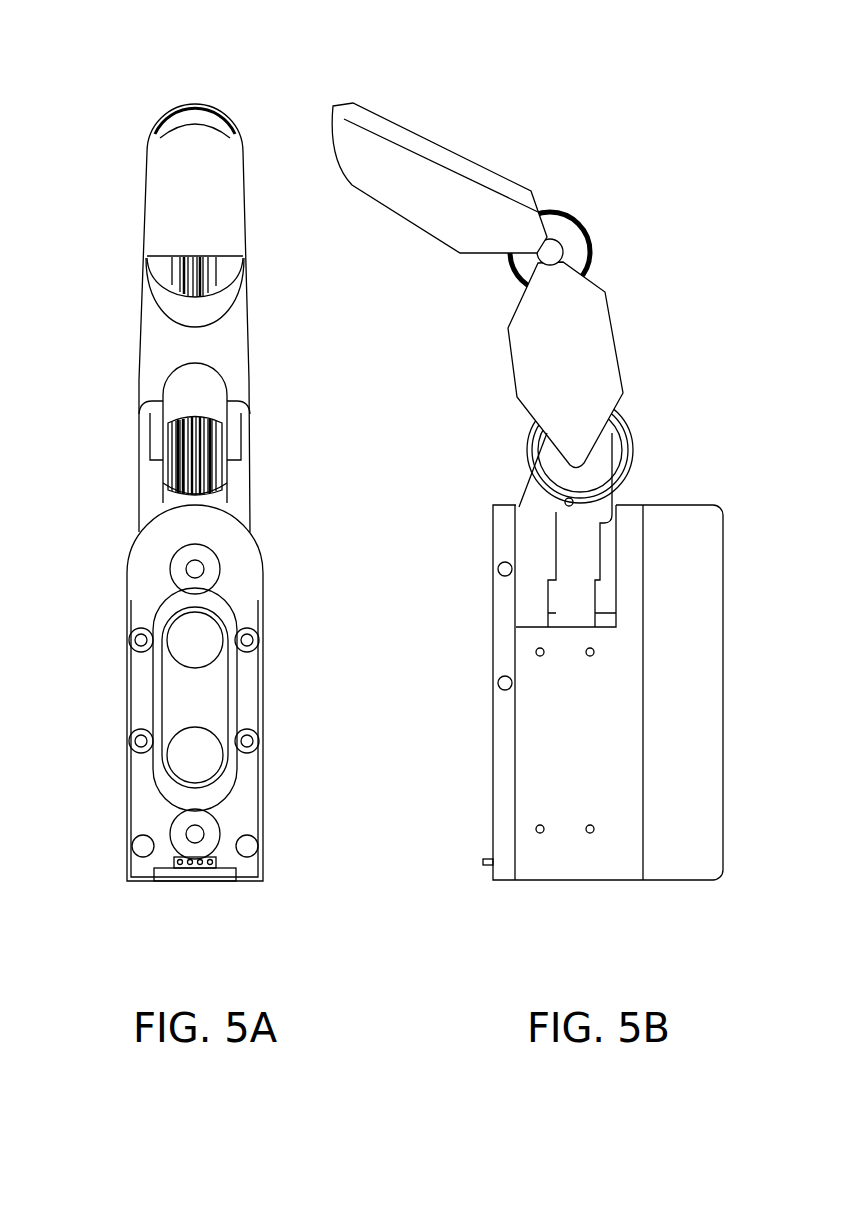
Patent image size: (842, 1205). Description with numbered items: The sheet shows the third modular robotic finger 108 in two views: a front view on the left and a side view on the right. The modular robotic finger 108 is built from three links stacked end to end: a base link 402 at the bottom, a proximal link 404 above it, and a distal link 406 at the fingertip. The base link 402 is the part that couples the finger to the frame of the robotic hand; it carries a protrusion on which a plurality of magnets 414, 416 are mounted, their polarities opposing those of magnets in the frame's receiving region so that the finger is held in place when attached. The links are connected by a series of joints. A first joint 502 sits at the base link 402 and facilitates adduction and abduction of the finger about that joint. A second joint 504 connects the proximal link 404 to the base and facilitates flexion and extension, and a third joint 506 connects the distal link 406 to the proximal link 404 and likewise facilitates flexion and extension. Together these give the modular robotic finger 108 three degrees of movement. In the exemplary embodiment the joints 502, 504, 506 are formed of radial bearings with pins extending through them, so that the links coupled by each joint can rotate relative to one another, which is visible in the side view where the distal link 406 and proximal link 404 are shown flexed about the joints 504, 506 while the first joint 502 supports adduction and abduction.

In FIG. 5A, the third modular robotic finger 108 is at (118, 112).
In FIG. 5B, the third modular robotic finger 108 is at (449, 92).
In FIG. 5A, the base link 402 is at (126, 628).
In FIG. 5B, the base link 402 is at (724, 621).
In FIG. 5A, the proximal link 404 is at (148, 330).
In FIG. 5B, the proximal link 404 is at (607, 323).
In FIG. 5A, the distal link 406 is at (203, 106).
In FIG. 5B, the distal link 406 is at (420, 130).
In FIG. 5A, the magnet 414 is at (210, 635).
In FIG. 5A, the magnet 416 is at (212, 745).
In FIG. 5A, the first joint 502 is at (262, 558).
In FIG. 5B, the first joint 502 is at (491, 600).
In FIG. 5A, the second joint 504 is at (220, 436).
In FIG. 5B, the second joint 504 is at (627, 439).
In FIG. 5A, the third joint 506 is at (240, 265).
In FIG. 5B, the third joint 506 is at (598, 252).